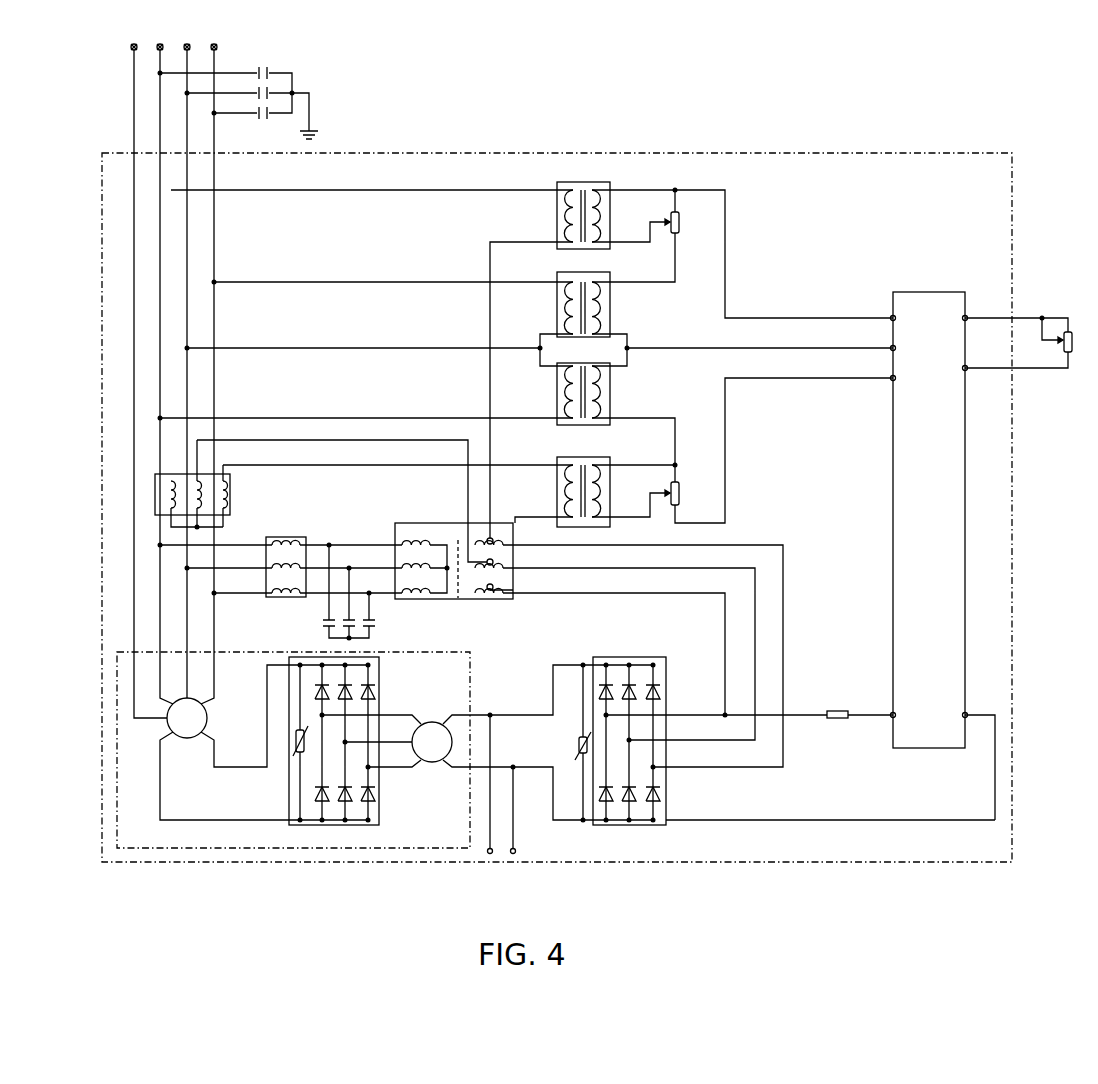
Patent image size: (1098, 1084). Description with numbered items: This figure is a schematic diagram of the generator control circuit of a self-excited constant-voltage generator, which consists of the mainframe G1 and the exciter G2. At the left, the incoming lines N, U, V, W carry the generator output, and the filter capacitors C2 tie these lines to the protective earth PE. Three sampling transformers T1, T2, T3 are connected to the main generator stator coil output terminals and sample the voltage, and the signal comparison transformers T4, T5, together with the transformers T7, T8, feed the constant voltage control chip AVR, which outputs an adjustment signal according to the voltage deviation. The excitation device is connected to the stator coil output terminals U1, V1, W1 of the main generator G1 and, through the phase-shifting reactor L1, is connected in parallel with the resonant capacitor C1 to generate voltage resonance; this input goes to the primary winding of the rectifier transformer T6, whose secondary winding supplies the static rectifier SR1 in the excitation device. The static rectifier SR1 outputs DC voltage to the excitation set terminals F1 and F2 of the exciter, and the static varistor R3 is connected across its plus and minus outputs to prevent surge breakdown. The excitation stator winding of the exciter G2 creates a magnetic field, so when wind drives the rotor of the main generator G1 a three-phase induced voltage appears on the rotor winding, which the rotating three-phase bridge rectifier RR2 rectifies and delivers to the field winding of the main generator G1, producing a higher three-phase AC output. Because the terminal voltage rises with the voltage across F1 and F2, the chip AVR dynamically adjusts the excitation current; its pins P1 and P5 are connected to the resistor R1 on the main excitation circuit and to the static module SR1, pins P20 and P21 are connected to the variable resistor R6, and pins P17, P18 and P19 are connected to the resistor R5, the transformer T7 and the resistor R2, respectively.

The neutral wiring N is at (145, 381).
The phase U line U is at (225, 432).
The phase V line V is at (183, 371).
The phase W line W is at (250, 405).
The exciter C2 is at (226, 83).
The protective earth PE is at (299, 119).
The signal comparison transformer T4 is at (690, 353).
The resistor R2 is at (647, 236).
The transformer T7 is at (716, 309).
The transformer T8 is at (617, 411).
The signal comparison transformer T5 is at (595, 482).
The resistor R5 is at (779, 450).
The sampling transformer T1 is at (192, 474).
The sampling transformer T2 is at (192, 463).
The sampling transformer T3 is at (218, 472).
The phase-shifting reactor L1 is at (266, 576).
The stator coil output terminal U1 is at (280, 534).
The stator coil output terminal V1 is at (294, 561).
The stator coil output terminal W1 is at (307, 586).
The resonant capacitor C1 is at (337, 593).
The rectifier transformer T6 is at (589, 645).
The mainframe G1 is at (187, 718).
The exciter G2 is at (497, 742).
The rotating three-phase bridge rectifier RR2 is at (351, 750).
The excitation system set terminal F1 is at (497, 788).
The excitation system set terminal F2 is at (520, 814).
The static rectifier SR1 is at (786, 750).
The static varistor R3 is at (572, 742).
The constant voltage control chip AVR is at (929, 520).
The pin of AVR P19 is at (907, 326).
The pin of AVR P18 is at (907, 355).
The pin of AVR P17 is at (907, 385).
The pin of AVR P20 is at (981, 306).
The pin of AVR P21 is at (981, 380).
The pin of AVR P1 is at (904, 719).
The pin of AVR P5 is at (979, 767).
The resistor on main excitation circuit R1 is at (809, 702).
The variable resistor R6 is at (1018, 342).